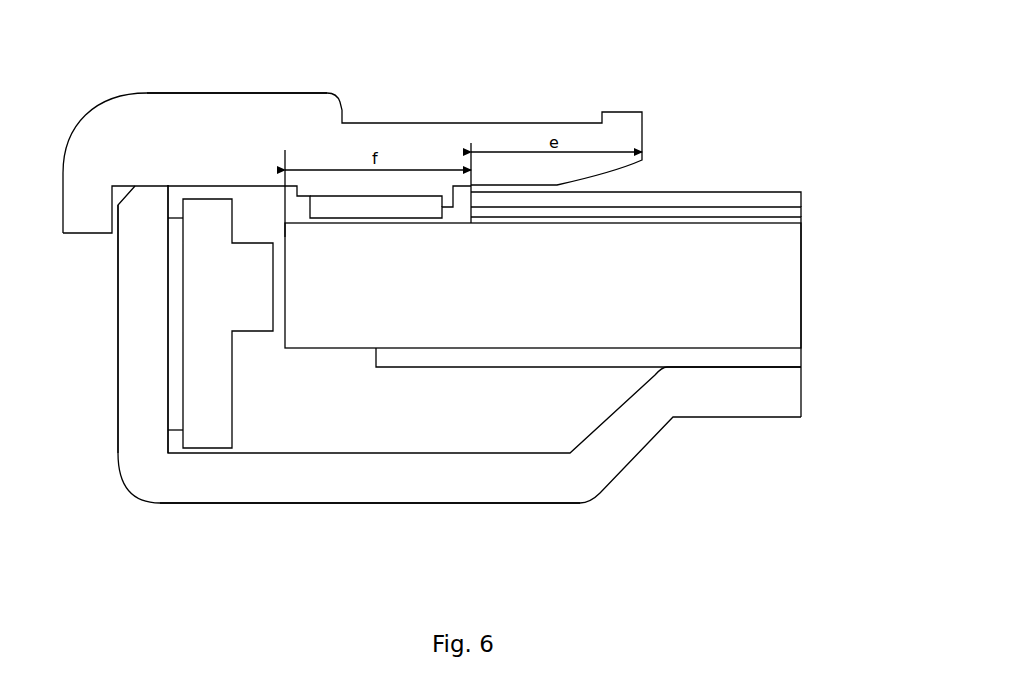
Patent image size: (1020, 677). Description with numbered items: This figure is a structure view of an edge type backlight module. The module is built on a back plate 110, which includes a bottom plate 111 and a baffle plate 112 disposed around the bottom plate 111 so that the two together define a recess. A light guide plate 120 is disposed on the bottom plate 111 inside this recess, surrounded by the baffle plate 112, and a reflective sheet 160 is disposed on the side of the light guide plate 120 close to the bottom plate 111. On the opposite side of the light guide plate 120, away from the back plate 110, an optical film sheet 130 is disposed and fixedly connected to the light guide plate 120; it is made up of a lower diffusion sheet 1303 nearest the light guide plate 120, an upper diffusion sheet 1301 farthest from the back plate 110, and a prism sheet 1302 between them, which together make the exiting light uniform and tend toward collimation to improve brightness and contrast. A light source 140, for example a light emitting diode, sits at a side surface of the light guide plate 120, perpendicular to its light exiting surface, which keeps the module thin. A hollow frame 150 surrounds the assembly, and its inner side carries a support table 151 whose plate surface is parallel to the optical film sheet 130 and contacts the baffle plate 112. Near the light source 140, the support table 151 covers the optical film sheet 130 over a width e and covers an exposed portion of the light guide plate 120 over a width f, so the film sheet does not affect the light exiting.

The back plate 110 is at (203, 550).
The bottom plate 111 is at (202, 472).
The baffle plate 112 is at (128, 425).
The light guide plate 120 is at (801, 317).
The optical film sheet 130 is at (699, 195).
The upper diffusion sheet 1301 is at (801, 196).
The prism sheet 1302 is at (801, 213).
The lower diffusion sheet 1303 is at (801, 222).
The light source 140 is at (223, 400).
The frame 150 is at (72, 221).
The support table 151 is at (265, 105).
The reflective sheet 160 is at (801, 355).